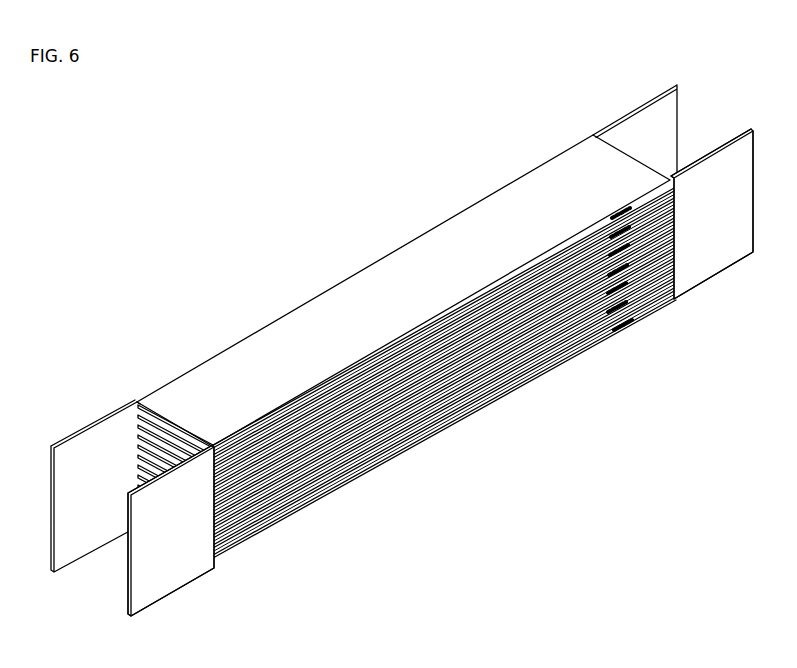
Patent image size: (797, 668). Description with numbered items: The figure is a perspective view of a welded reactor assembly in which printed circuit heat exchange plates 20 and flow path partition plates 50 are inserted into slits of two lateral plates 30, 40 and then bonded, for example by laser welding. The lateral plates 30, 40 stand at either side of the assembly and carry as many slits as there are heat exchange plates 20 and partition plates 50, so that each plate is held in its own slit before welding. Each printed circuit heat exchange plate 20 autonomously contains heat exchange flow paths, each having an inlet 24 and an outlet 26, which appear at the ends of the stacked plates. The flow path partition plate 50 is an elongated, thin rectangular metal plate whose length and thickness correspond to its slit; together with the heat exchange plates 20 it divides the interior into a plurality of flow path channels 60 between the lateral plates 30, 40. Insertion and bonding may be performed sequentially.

The printed circuit heat exchange plate 20 is at (220, 358).
The lateral plate 30 is at (92, 424).
The lateral plate 40 is at (188, 582).
The flow path partition plate 50 is at (136, 404).
The flow path channel 60 is at (140, 426).
The inlet 24 is at (444, 372).
The outlet 26 is at (632, 322).